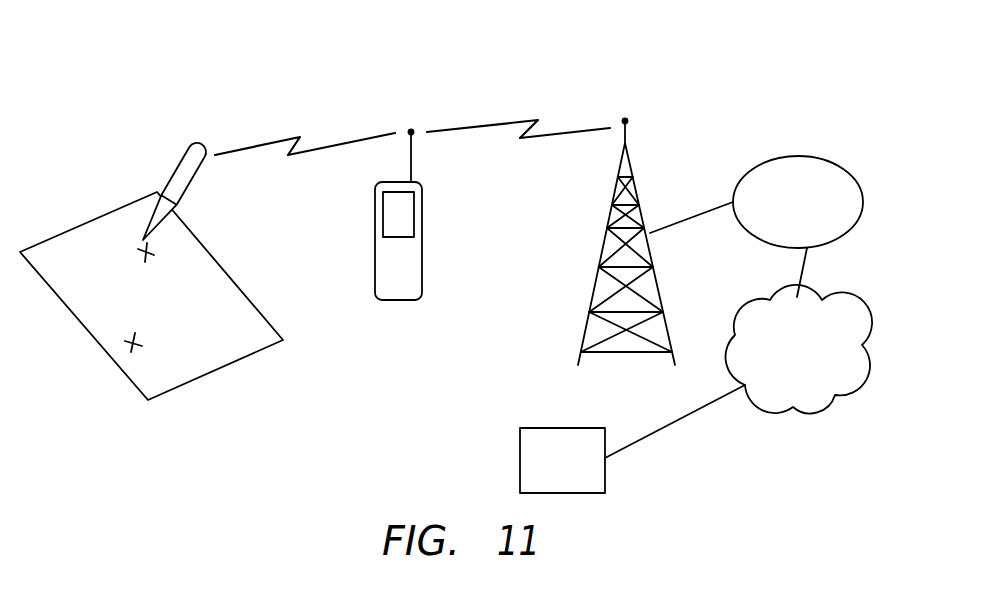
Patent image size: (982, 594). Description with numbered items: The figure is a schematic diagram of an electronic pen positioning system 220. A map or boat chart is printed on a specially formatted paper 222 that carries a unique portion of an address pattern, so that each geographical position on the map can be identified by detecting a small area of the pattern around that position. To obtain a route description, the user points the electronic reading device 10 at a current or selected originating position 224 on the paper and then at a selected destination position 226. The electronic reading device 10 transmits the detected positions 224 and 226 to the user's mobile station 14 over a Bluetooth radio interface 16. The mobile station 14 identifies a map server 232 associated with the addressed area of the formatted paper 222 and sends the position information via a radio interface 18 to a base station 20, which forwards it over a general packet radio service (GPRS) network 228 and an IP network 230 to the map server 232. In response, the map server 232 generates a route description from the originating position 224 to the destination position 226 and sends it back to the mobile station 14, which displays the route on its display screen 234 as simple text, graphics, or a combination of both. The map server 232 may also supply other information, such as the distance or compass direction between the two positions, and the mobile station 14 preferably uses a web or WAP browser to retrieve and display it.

The electronic reading device 10 is at (198, 146).
The mobile station 14 is at (422, 296).
The Bluetooth radio interface 16 is at (328, 142).
The radio interface 18 is at (472, 127).
The base station 20 is at (632, 163).
The electronic pen positioning system 220 is at (690, 77).
The formatted paper 222 is at (236, 284).
The originating position 224 is at (149, 259).
The destination position 226 is at (139, 342).
The GPRS network 228 is at (828, 158).
The IP network 230 is at (833, 298).
The map server 232 is at (552, 427).
The display screen 234 is at (415, 213).